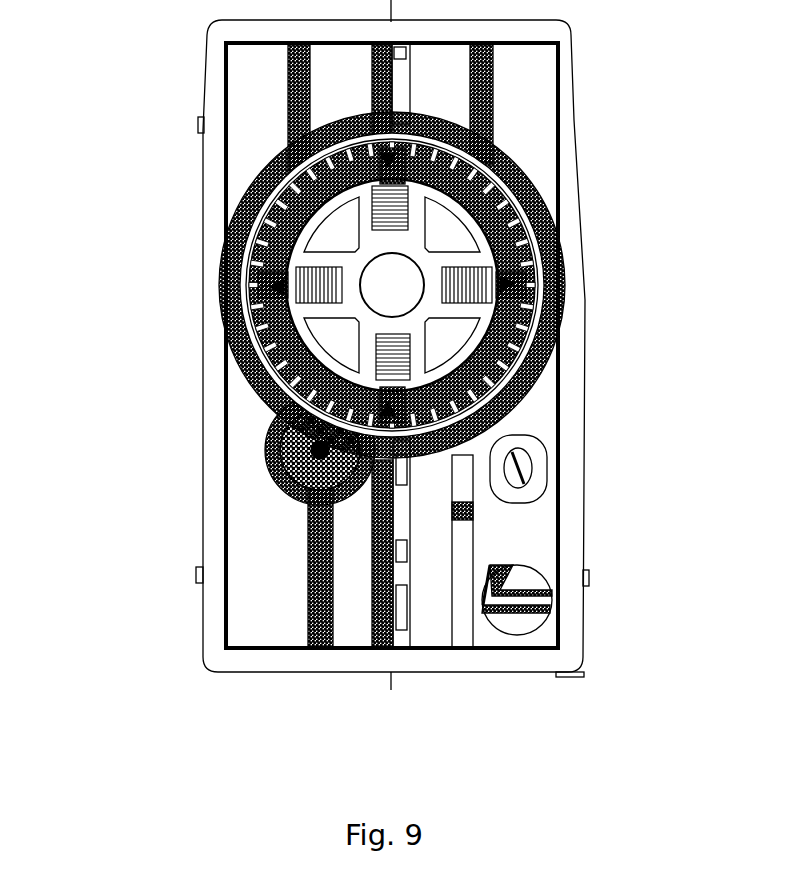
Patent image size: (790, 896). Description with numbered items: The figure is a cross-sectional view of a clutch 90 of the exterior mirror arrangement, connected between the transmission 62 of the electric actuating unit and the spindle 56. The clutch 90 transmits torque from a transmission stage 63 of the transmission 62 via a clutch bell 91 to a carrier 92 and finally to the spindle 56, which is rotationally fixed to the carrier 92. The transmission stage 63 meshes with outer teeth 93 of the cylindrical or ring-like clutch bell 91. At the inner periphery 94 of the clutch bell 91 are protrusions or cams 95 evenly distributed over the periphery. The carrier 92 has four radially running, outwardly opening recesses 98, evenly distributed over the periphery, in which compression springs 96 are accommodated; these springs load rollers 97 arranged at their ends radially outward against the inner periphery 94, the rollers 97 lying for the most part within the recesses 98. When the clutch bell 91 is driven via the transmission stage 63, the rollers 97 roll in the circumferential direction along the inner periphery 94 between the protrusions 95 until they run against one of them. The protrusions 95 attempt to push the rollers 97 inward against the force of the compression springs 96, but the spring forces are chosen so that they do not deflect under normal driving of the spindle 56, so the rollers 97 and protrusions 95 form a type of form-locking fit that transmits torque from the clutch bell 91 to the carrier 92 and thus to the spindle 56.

The spindle 56 is at (400, 290).
The transmission 62 is at (200, 655).
The transmission stage 63 is at (318, 468).
The clutch 90 is at (548, 168).
The clutch bell 91 is at (267, 397).
The carrier 92 is at (287, 323).
The outer teeth 93 is at (298, 302).
The inner periphery 94 is at (283, 262).
The protrusions or cams 95 is at (305, 205).
The compression springs 96 is at (473, 302).
The rollers 97 is at (505, 286).
The recesses 98 is at (440, 263).